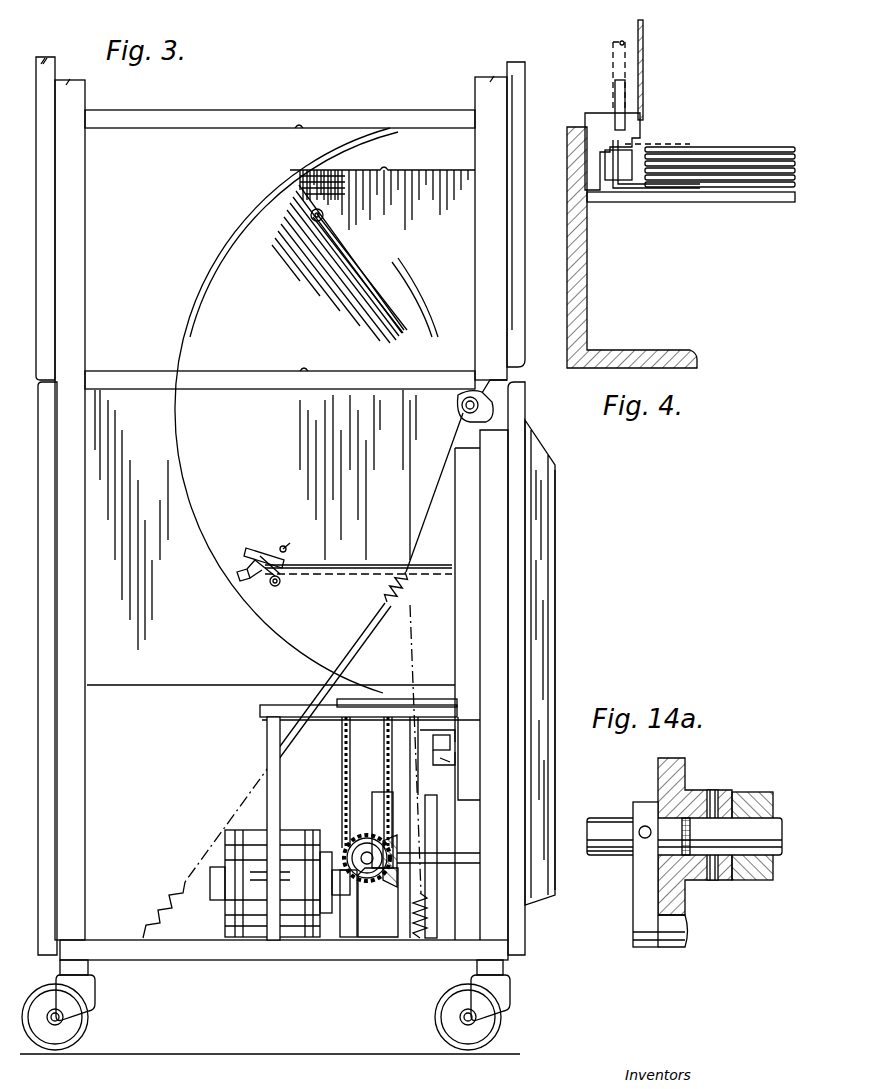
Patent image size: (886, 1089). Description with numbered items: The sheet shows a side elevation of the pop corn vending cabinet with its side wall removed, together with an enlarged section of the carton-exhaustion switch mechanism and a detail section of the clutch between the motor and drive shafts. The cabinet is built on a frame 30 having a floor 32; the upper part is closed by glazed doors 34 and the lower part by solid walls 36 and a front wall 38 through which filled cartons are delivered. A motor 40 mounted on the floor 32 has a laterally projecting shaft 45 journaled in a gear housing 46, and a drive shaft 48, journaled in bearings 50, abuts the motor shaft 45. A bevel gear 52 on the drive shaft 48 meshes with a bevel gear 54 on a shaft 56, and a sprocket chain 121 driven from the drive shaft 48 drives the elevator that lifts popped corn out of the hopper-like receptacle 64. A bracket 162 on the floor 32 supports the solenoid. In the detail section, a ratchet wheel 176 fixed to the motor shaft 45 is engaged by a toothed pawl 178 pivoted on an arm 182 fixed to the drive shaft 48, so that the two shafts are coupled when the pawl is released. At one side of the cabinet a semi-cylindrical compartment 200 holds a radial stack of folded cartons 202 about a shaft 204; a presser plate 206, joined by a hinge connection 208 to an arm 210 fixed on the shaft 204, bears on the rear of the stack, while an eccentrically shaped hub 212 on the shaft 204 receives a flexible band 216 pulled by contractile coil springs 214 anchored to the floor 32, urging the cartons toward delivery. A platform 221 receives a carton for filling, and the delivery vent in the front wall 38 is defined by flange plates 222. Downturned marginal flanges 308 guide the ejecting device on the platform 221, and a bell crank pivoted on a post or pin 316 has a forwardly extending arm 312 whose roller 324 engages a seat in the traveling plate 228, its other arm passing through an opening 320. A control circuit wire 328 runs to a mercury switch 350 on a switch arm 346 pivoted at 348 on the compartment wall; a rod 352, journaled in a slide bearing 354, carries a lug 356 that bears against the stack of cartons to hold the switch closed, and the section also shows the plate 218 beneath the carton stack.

In FIG. 3, the frame 30 is at (285, 525).
In FIG. 4, the frame 30 is at (587, 297).
In FIG. 3, the floor 32 is at (170, 946).
In FIG. 3, the glazed doors 34 is at (55, 241).
In FIG. 3, the solid walls 36 is at (62, 552).
In FIG. 3, the front wall 38 is at (525, 575).
In FIG. 3, the motor 40 is at (280, 883).
In FIG. 14A, the motor shaft 45 is at (790, 822).
In FIG. 3, the gear housing 46 is at (342, 900).
In FIG. 14A, the gear housing 46 is at (745, 795).
In FIG. 3, the drive shaft 48 is at (368, 864).
In FIG. 14A, the drive shaft 48 is at (607, 822).
In FIG. 3, the bearings 50 is at (378, 864).
In FIG. 3, the bevel gear 52 is at (365, 836).
In FIG. 3, the bevel gear 54 is at (397, 848).
In FIG. 3, the shaft 56 is at (455, 864).
In FIG. 3, the hopper-like receptacle 64 is at (281, 410).
In FIG. 3, the sprocket chain 121 is at (342, 778).
In FIG. 3, the bracket 162 is at (428, 795).
In FIG. 14A, the ratchet wheel 176 is at (686, 762).
In FIG. 14A, the toothed pawl 178 is at (686, 922).
In FIG. 14A, the arm 182 is at (633, 890).
In FIG. 3, the compartment 200 is at (215, 247).
In FIG. 4, the compartment 200 is at (638, 25).
In FIG. 3, the cartons 202 is at (358, 252).
In FIG. 4, the cartons 202 is at (722, 186).
In FIG. 3, the shaft 204 is at (462, 408).
In FIG. 3, the presser plate 206 is at (392, 302).
In FIG. 3, the hinge connection 208 is at (310, 210).
In FIG. 3, the arm 210 is at (420, 308).
In FIG. 3, the eccentrically shaped hub 212 is at (485, 388).
In FIG. 3, the contractile coil springs 214 is at (412, 590).
In FIG. 3, the flexible band 216 is at (420, 552).
In FIG. 4, the plate 218 is at (770, 202).
In FIG. 3, the platform 221 is at (285, 695).
In FIG. 3, the flange plates 222 is at (556, 630).
In FIG. 3, the traveling plate 228 is at (455, 732).
In FIG. 3, the downturned marginal flanges 308 is at (372, 700).
In FIG. 3, the forwardly extending arm 312 is at (448, 692).
In FIG. 3, the post or pin 316 is at (414, 690).
In FIG. 3, the opening 320 is at (455, 762).
In FIG. 3, the roller 324 is at (450, 744).
In FIG. 3, the circuit wire 328 is at (292, 548).
In FIG. 3, the switch arm 346 is at (250, 585).
In FIG. 3, the pivot 348 is at (280, 586).
In FIG. 3, the mercury switch 350 is at (258, 548).
In FIG. 3, the rod 352 is at (376, 558).
In FIG. 4, the rod 352 is at (615, 98).
In FIG. 4, the slide bearing 354 is at (612, 151).
In FIG. 4, the lug 356 is at (660, 142).